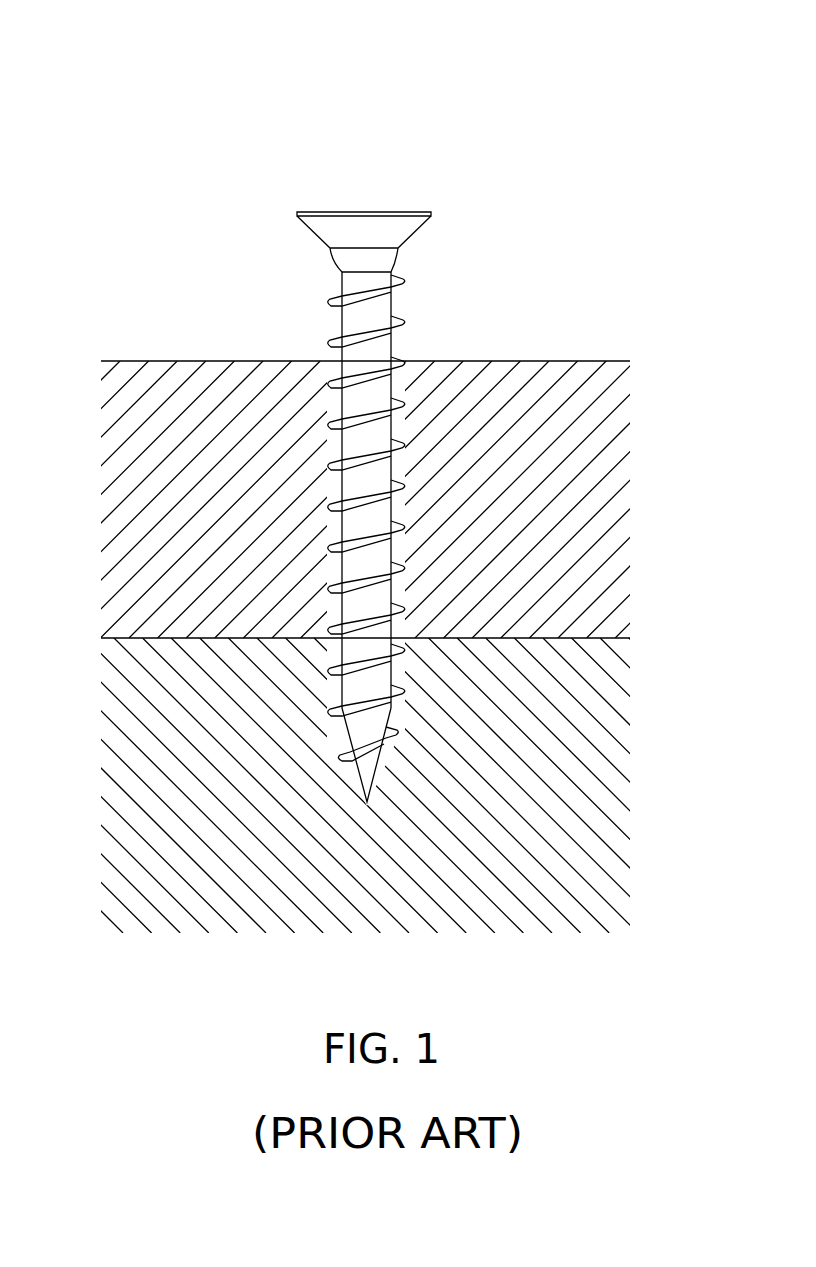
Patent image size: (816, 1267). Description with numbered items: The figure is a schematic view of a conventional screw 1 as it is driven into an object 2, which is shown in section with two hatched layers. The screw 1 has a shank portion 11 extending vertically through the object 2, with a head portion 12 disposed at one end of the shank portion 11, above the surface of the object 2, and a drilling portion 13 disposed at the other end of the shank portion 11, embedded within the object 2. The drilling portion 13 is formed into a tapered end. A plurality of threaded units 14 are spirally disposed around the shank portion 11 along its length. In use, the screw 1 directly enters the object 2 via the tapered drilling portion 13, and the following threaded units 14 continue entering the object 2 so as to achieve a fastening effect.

The conventional screw 1 is at (128, 124).
The object 2 is at (512, 358).
The shank portion 11 is at (338, 322).
The head portion 12 is at (412, 227).
The drilling portion 13 is at (382, 763).
The threaded units 14 is at (393, 566).